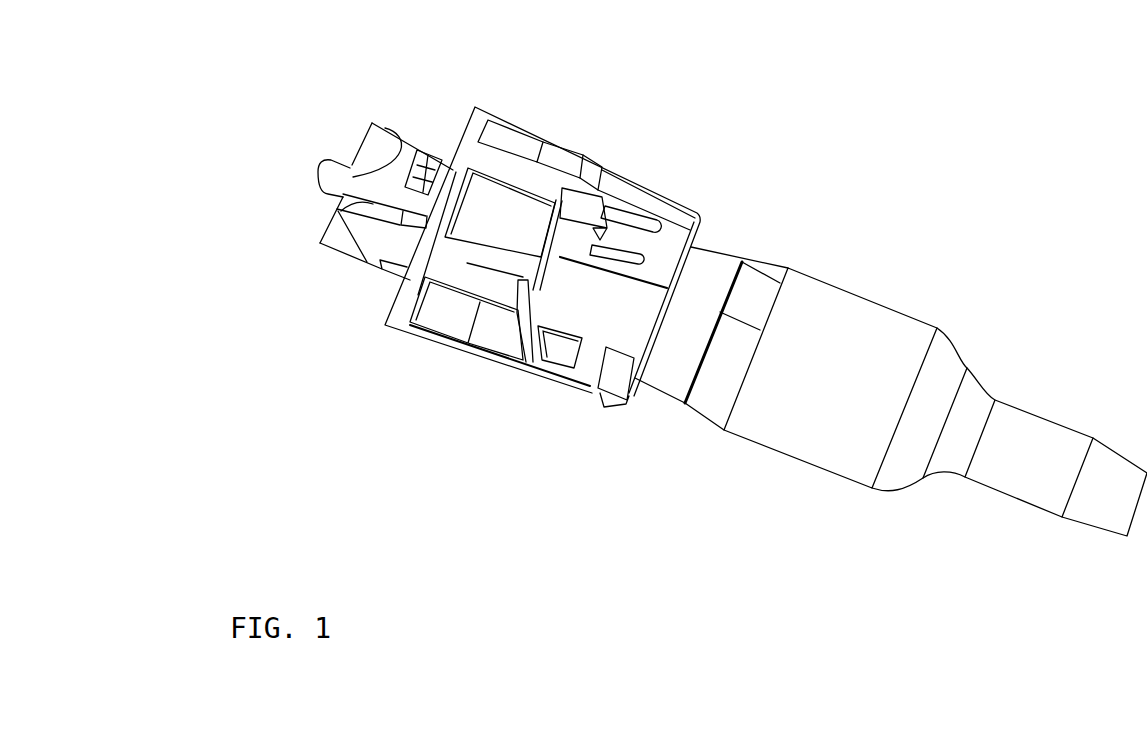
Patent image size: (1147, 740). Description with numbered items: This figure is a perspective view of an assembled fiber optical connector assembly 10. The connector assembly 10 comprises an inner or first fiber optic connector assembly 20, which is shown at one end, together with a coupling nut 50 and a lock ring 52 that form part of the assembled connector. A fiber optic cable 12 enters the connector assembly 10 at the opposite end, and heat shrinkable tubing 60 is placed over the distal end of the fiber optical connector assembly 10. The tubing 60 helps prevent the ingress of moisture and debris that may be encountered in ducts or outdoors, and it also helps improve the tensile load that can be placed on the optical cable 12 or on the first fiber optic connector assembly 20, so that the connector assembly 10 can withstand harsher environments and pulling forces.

The fiber optical connector assembly 10 is at (216, 81).
The fiber optic cable 12 is at (1125, 504).
The first fiber optic connector assembly 20 is at (393, 247).
The coupling nut 50 is at (502, 238).
The lock ring 52 is at (629, 338).
The heat shrinkable tubing 60 is at (842, 397).